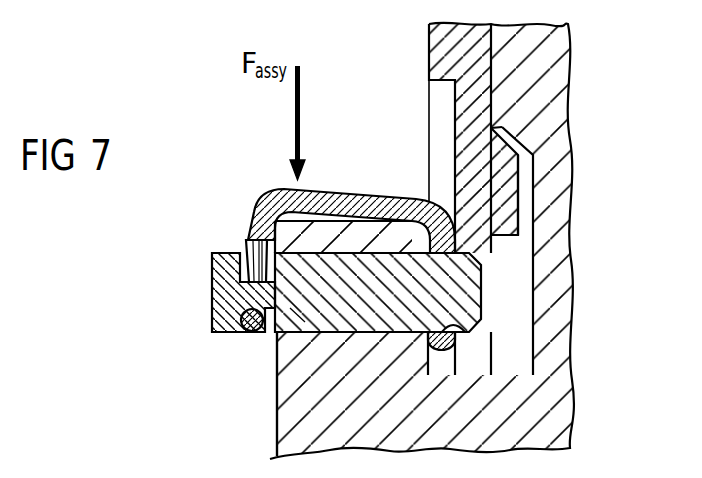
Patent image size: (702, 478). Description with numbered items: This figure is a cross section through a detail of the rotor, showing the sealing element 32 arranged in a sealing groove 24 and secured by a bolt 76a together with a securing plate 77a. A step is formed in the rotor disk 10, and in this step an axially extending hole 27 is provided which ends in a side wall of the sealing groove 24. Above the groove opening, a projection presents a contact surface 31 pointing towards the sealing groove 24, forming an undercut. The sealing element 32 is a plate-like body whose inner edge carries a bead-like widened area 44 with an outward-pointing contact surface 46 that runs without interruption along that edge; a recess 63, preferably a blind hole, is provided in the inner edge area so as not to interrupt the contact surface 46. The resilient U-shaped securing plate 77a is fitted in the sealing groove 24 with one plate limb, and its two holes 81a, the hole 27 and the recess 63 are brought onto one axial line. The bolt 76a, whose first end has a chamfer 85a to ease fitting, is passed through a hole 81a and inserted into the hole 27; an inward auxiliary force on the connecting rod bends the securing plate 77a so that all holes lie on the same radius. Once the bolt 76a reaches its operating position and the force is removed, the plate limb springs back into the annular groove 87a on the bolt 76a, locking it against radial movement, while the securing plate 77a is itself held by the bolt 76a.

The rotor disk 10 is at (545, 430).
The sealing groove 24 is at (510, 97).
The hole 27 is at (342, 335).
The contact surface 31 is at (503, 168).
The sealing element 32 is at (440, 58).
The widened area 44 is at (508, 200).
The contact surface 46 is at (512, 180).
The recess 63 is at (482, 266).
The bolt 76a is at (279, 366).
The securing plate 77a is at (352, 187).
The holes 81a is at (212, 308).
The chamfer 85a is at (465, 326).
The annular groove 87a is at (245, 248).